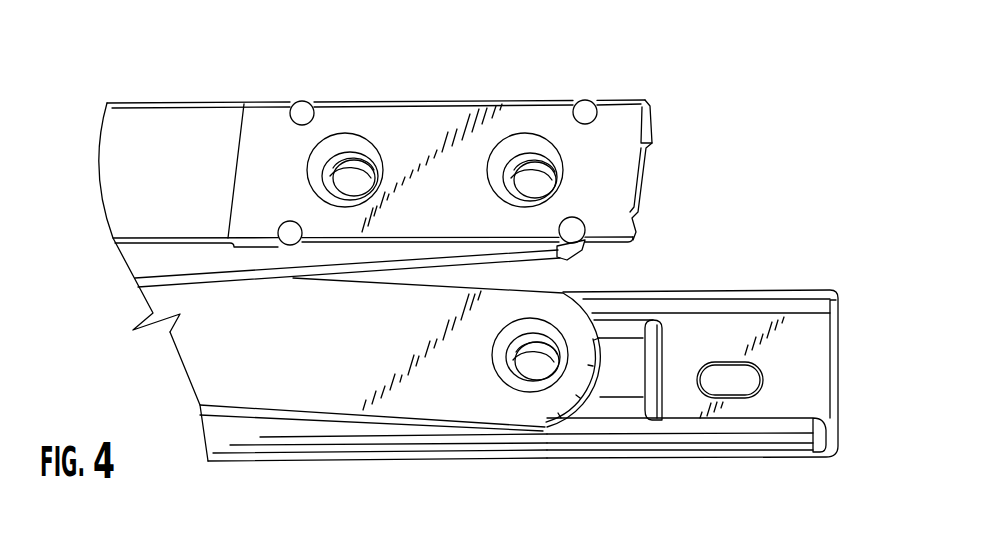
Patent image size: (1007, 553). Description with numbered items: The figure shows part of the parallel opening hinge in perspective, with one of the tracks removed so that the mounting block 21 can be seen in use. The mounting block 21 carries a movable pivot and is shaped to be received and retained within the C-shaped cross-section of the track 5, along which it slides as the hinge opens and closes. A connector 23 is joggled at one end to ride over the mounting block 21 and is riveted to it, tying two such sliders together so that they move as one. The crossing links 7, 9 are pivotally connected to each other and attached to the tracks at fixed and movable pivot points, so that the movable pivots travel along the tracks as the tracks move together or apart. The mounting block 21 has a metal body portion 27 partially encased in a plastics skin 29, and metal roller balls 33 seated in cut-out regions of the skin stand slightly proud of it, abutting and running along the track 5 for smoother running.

The mounting block 21 is at (672, 80).
The connector 23 is at (152, 117).
The roller balls 33 is at (305, 110).
The crossing link 9 is at (163, 257).
The crossing link 7 is at (287, 393).
The track 5 is at (802, 328).
The metal body portion 27 is at (627, 353).
The plastics skin 29 is at (658, 355).